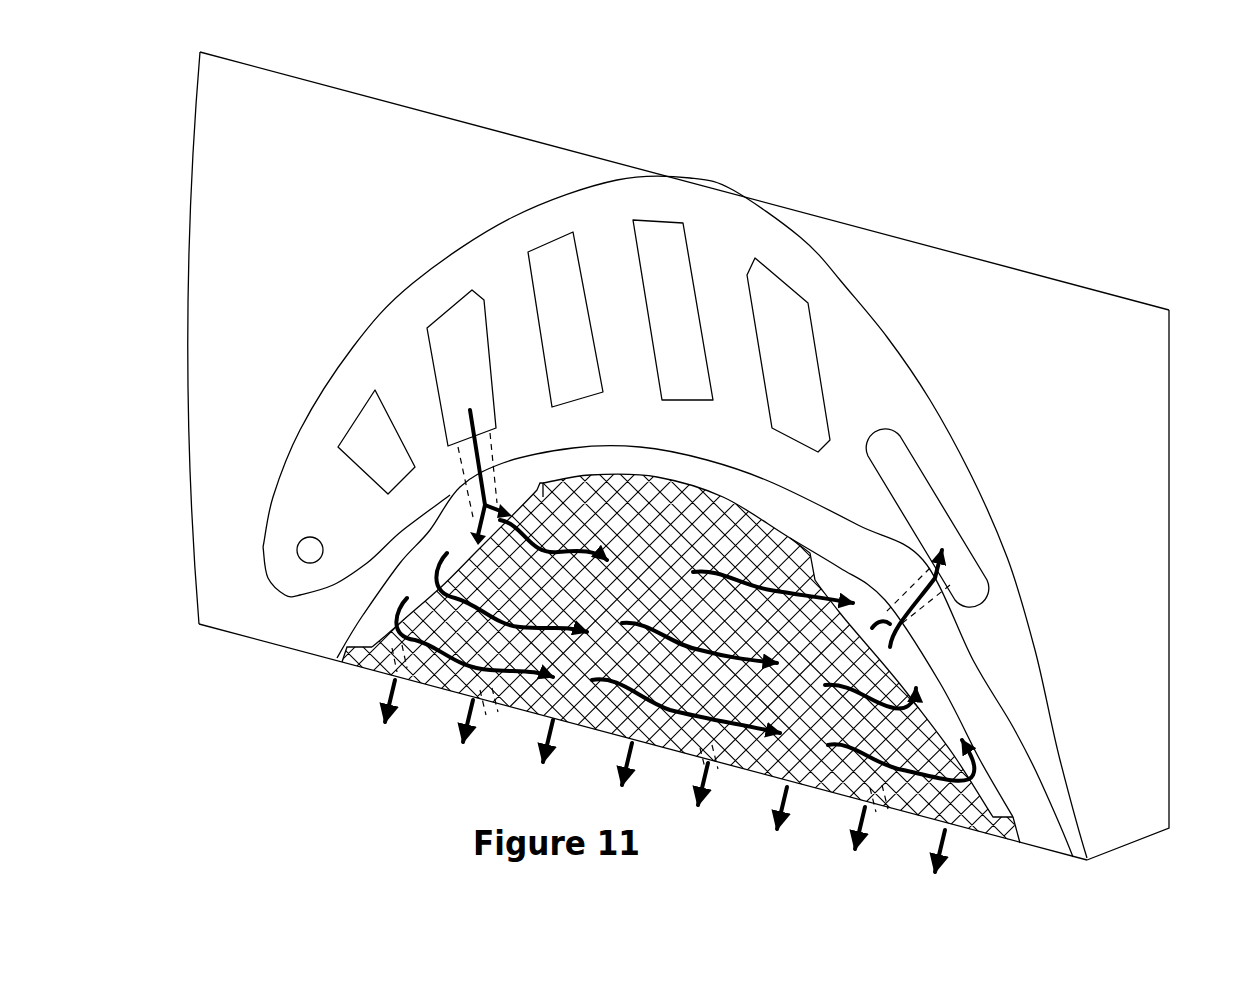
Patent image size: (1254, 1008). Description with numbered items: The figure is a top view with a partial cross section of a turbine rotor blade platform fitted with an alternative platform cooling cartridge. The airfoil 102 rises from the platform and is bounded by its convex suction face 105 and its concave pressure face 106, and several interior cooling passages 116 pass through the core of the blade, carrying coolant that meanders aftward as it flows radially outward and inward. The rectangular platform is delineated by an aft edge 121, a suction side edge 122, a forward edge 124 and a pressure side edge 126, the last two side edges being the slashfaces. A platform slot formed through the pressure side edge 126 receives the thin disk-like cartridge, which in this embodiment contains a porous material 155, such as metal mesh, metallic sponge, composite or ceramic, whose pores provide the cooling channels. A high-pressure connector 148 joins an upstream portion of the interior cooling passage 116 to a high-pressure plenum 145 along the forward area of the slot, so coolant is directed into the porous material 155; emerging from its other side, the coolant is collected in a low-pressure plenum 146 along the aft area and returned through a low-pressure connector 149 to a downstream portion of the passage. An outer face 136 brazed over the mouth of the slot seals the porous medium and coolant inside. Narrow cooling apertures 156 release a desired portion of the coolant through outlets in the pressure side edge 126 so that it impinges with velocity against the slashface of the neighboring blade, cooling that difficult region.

The airfoil 102 is at (675, 479).
The suction face 105 is at (505, 217).
The pressure face 106 is at (950, 640).
The interior cooling passage 116 is at (440, 379).
The aft edge 121 is at (1169, 434).
The suction side edge 122 is at (822, 216).
The forward edge 124 is at (190, 198).
The pressure side edge 126 is at (299, 628).
The outer face 136 is at (512, 705).
The high-pressure plenum 145 is at (470, 522).
The low-pressure plenum 146 is at (842, 587).
The high-pressure connector 148 is at (497, 450).
The low-pressure connector 149 is at (905, 605).
The porous material 155 is at (653, 520).
The cooling apertures 156 is at (380, 657).